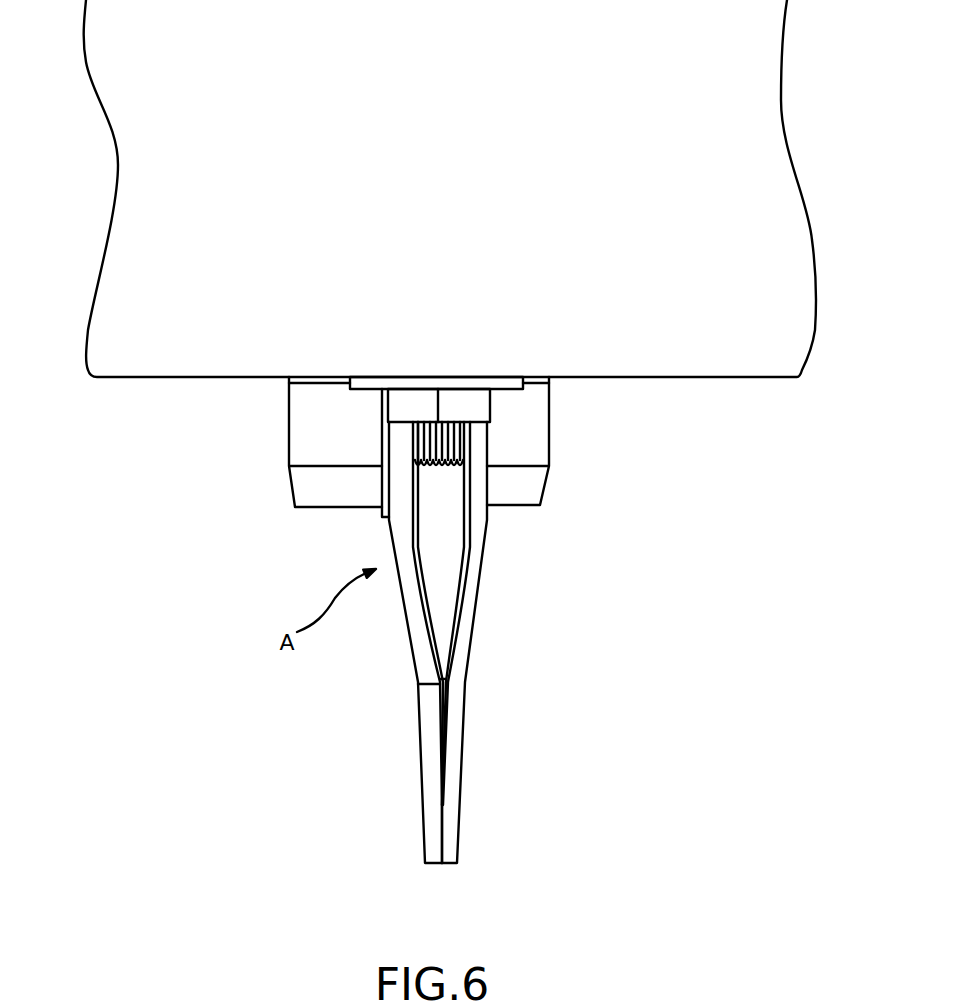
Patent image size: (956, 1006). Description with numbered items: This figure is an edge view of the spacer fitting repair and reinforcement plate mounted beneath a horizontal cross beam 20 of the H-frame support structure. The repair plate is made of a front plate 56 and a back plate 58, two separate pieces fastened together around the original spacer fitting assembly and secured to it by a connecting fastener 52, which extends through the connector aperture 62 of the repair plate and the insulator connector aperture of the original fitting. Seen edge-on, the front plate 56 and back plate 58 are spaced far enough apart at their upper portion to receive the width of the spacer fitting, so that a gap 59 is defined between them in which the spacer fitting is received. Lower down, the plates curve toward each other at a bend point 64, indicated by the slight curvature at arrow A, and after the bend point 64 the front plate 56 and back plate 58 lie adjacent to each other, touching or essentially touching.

The horizontal cross beam 20 is at (183, 377).
The connecting fastener 52 is at (520, 492).
The front plate 56 is at (422, 758).
The back plate 58 is at (452, 773).
The gap 59 is at (434, 584).
The connector aperture 62 is at (445, 682).
The bend point 64 is at (440, 682).